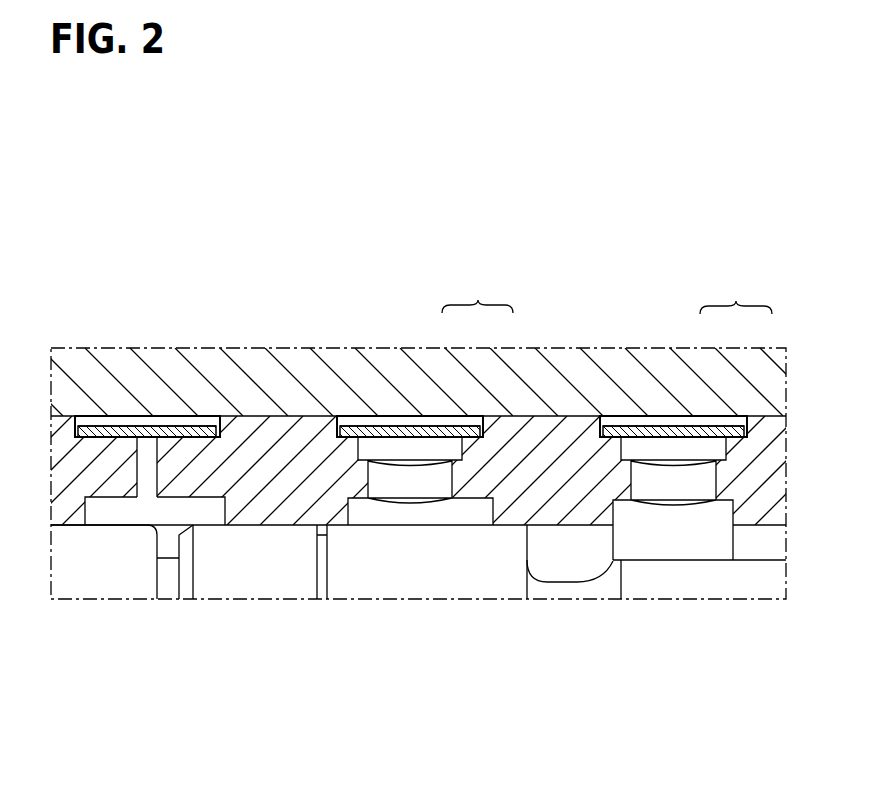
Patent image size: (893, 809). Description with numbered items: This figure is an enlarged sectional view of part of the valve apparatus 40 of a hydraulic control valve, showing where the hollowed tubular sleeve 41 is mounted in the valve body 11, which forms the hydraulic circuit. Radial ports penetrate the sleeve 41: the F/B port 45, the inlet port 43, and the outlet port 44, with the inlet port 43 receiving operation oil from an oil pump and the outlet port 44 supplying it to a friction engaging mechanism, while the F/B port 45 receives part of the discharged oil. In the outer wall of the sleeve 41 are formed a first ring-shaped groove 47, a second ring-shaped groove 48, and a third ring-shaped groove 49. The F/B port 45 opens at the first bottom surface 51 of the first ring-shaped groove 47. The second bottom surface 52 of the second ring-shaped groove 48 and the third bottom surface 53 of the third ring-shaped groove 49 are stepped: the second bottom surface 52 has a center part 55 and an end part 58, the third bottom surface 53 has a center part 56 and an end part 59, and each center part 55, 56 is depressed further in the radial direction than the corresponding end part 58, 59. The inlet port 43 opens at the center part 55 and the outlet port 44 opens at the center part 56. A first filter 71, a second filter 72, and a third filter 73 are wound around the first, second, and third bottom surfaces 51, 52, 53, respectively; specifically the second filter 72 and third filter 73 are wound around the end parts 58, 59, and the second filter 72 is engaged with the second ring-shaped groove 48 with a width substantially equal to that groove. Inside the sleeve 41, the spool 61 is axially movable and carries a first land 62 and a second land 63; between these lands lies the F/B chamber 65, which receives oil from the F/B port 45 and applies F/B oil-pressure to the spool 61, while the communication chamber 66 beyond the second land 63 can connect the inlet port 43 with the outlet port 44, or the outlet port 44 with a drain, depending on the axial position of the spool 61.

The valve body 11 is at (770, 392).
The valve apparatus 40 is at (264, 405).
The sleeve 41 is at (770, 490).
The inlet port 43 is at (410, 486).
The outlet port 44 is at (675, 486).
The F/B port 45 is at (145, 462).
The first ring-shaped groove 47 is at (82, 414).
The second ring-shaped groove 48 is at (353, 413).
The third ring-shaped groove 49 is at (615, 414).
The first bottom surface 51 is at (107, 436).
The second bottom surface 52 is at (426, 353).
The third bottom surface 53 is at (687, 353).
The center part 55 is at (473, 423).
The center part 56 is at (727, 421).
The end part 58 is at (481, 415).
The end part 59 is at (742, 414).
The spool 61 is at (770, 582).
The first land 62 is at (75, 555).
The second land 63 is at (381, 572).
The F/B chamber 65 is at (139, 515).
The communication chamber 66 is at (577, 552).
The first filter 71 is at (183, 430).
The second filter 72 is at (392, 434).
The third filter 73 is at (647, 433).